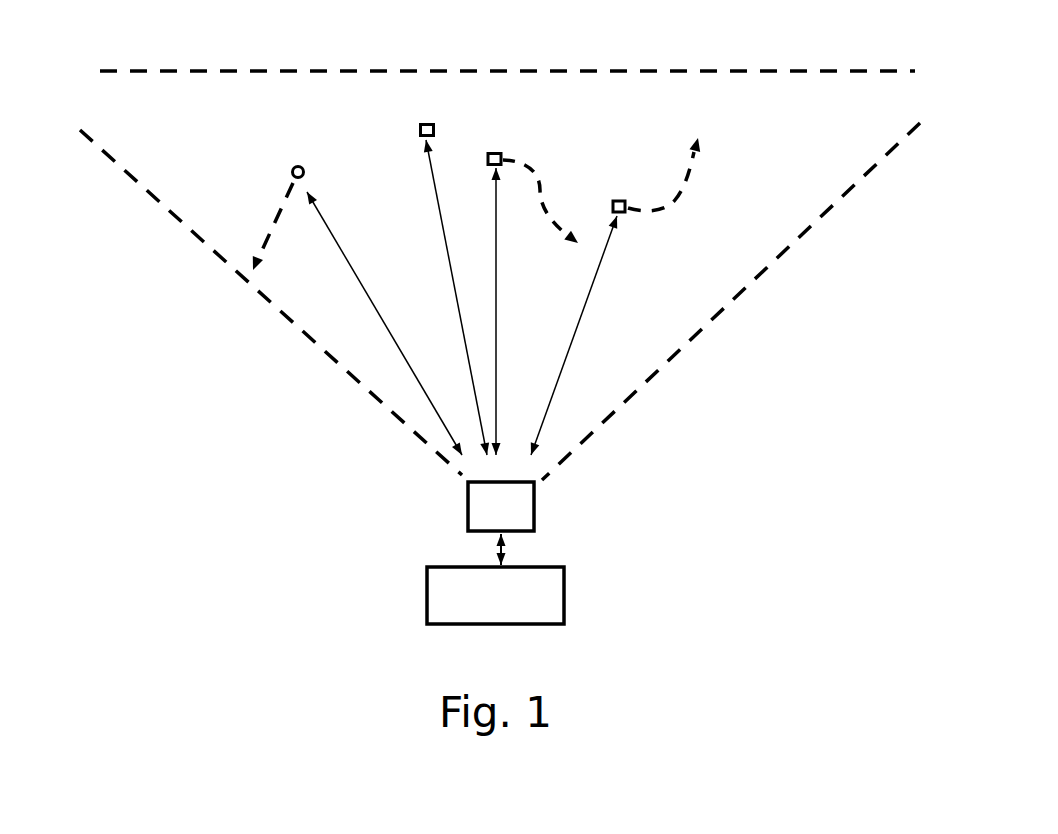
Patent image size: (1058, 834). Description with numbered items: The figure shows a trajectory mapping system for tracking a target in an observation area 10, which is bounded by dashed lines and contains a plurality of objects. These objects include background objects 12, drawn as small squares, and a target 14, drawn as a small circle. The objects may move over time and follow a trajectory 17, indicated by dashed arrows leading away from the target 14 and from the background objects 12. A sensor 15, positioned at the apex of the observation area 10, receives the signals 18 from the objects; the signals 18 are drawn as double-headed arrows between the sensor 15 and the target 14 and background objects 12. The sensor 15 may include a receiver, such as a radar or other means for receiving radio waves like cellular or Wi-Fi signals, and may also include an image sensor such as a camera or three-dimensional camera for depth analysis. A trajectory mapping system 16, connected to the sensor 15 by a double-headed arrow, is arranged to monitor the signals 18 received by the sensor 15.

The observation area 10 is at (770, 113).
The background objects 12 is at (438, 123).
The target 14 is at (302, 167).
The sensor 15 is at (534, 503).
The trajectory mapping system 16 is at (565, 583).
The trajectory 17 is at (266, 237).
The signals 18 is at (442, 233).